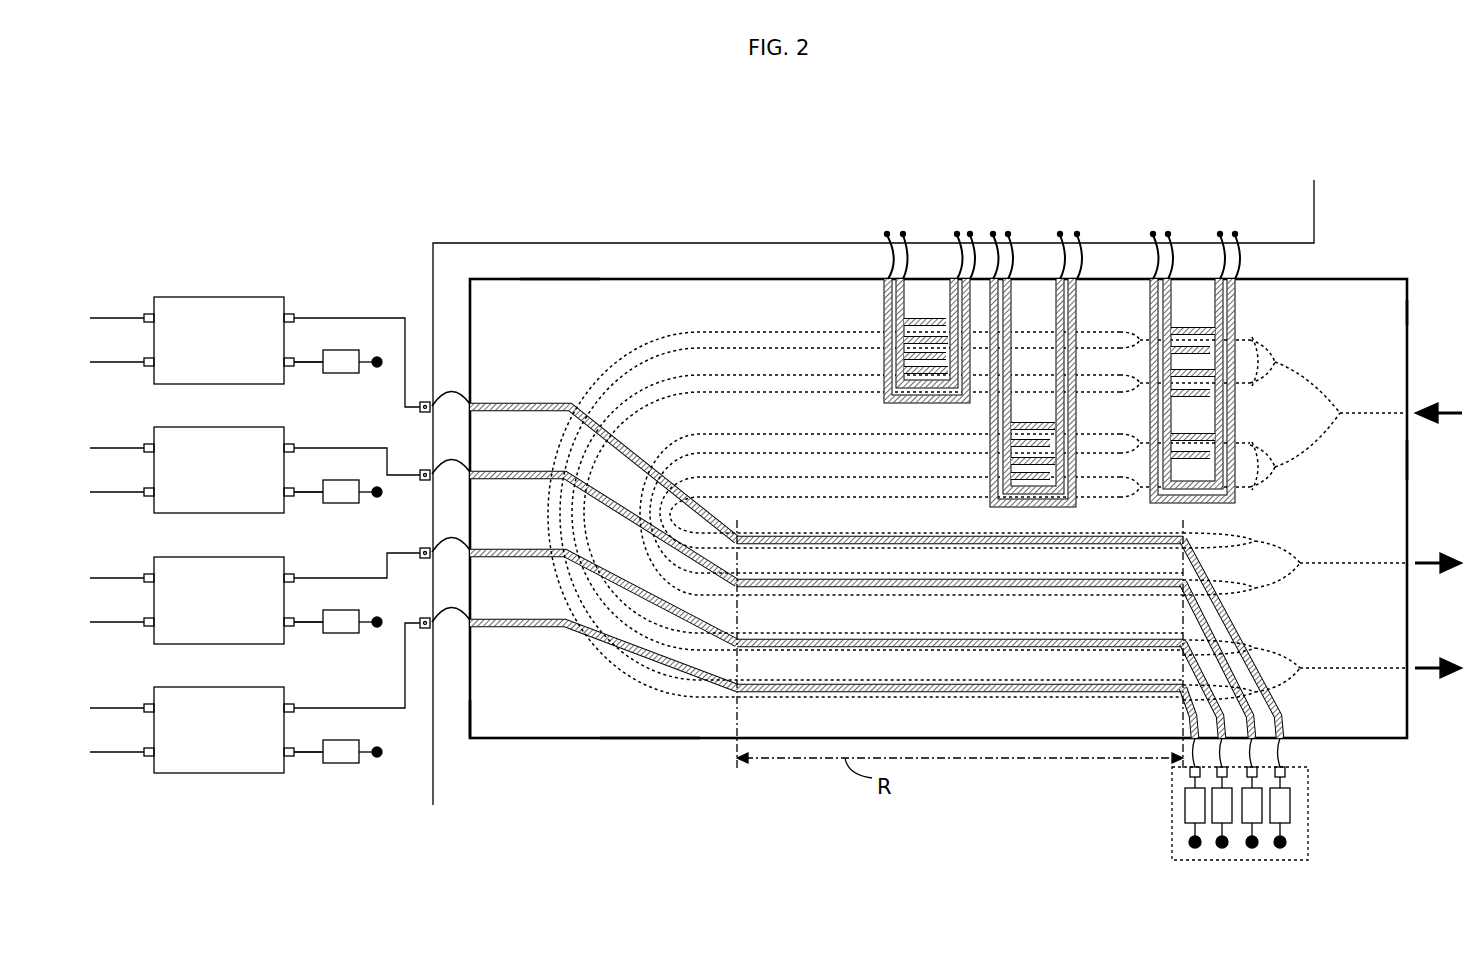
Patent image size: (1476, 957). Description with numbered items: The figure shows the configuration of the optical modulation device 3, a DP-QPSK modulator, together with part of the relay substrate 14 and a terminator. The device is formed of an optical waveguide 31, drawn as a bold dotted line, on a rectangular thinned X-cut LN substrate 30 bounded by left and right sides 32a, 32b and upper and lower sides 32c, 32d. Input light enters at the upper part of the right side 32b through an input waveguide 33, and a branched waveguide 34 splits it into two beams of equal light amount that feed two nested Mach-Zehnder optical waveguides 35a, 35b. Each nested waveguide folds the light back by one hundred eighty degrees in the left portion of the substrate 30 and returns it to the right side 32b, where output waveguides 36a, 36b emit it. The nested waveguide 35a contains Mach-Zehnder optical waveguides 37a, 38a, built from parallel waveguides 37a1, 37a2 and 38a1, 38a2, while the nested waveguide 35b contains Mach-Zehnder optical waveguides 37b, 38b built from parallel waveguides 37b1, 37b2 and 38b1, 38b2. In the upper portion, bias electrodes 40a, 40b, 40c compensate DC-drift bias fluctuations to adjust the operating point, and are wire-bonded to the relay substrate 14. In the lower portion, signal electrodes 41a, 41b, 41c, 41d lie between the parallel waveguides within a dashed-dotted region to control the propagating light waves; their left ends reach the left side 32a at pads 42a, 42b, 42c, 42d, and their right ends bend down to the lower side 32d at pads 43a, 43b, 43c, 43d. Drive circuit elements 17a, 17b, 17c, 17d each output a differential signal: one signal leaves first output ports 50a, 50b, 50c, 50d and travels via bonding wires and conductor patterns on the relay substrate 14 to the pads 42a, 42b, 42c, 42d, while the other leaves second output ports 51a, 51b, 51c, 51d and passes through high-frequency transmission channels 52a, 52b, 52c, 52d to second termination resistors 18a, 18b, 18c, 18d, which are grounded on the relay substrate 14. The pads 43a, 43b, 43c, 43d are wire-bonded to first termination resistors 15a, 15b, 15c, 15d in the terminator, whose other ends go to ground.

The optical modulation device 3 is at (1421, 312).
The relay substrate 14 is at (1314, 208).
The first termination resistor 15a is at (1200, 815).
The first termination resistor 15b is at (1228, 815).
The first termination resistor 15c is at (1262, 808).
The first termination resistor 15d is at (1290, 802).
The drive circuit element 17a is at (206, 298).
The drive circuit element 17b is at (206, 428).
The drive circuit element 17c is at (206, 558).
The drive circuit element 17d is at (206, 688).
The second termination resistor 18a is at (345, 373).
The second termination resistor 18b is at (345, 503).
The second termination resistor 18c is at (345, 633).
The second termination resistor 18d is at (345, 763).
The substrate 30 is at (1377, 292).
The optical waveguide 31 is at (1393, 398).
The left side 32a is at (470, 736).
The right side 32b is at (1407, 462).
The upper side 32c is at (540, 279).
The lower side 32d is at (635, 738).
The input waveguide 33 is at (1378, 405).
The branched waveguide 34 is at (1358, 430).
The nested Mach-Zehnder optical waveguide 35a is at (1262, 455).
The nested Mach-Zehnder optical waveguide 35b is at (1262, 380).
The output waveguide 36a is at (1348, 660).
The output waveguide 36b is at (1350, 560).
The Mach-Zehnder optical waveguide 37a is at (938, 478).
The parallel waveguide 37a1 is at (830, 478).
The parallel waveguide 37a2 is at (915, 497).
The Mach-Zehnder optical waveguide 37b is at (832, 378).
The parallel waveguide 37b1 is at (600, 375).
The parallel waveguide 37b2 is at (590, 395).
The Mach-Zehnder optical waveguide 38a is at (938, 455).
The parallel waveguide 38a1 is at (808, 452).
The parallel waveguide 38a2 is at (715, 425).
The Mach-Zehnder optical waveguide 38b is at (825, 348).
The parallel waveguide 38b1 is at (688, 330).
The parallel waveguide 38b2 is at (650, 348).
The bias electrode 40a is at (1238, 310).
The bias electrode 40b is at (1078, 300).
The bias electrode 40c is at (880, 300).
The signal electrode 41a is at (985, 544).
The signal electrode 41b is at (905, 587).
The signal electrode 41c is at (1003, 647).
The signal electrode 41d is at (920, 692).
The pad 42a is at (480, 412).
The pad 42b is at (480, 480).
The pad 42c is at (480, 558).
The pad 42d is at (480, 628).
The pad 43a is at (1284, 738).
The pad 43b is at (1256, 740).
The pad 43c is at (1226, 726).
The pad 43d is at (1200, 724).
The first output port 50a is at (284, 320).
The first output port 50b is at (284, 450).
The first output port 50c is at (284, 580).
The first output port 50d is at (284, 710).
The second output port 51a is at (284, 362).
The second output port 51b is at (284, 492).
The second output port 51c is at (284, 622).
The second output port 51d is at (284, 752).
The high-frequency transmission channel 52a is at (312, 362).
The high-frequency transmission channel 52b is at (312, 492).
The high-frequency transmission channel 52c is at (312, 622).
The high-frequency transmission channel 52d is at (312, 752).